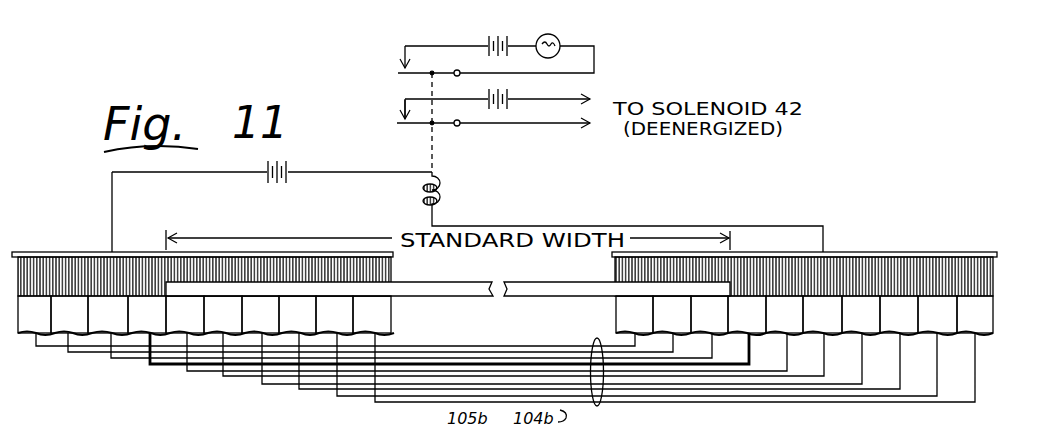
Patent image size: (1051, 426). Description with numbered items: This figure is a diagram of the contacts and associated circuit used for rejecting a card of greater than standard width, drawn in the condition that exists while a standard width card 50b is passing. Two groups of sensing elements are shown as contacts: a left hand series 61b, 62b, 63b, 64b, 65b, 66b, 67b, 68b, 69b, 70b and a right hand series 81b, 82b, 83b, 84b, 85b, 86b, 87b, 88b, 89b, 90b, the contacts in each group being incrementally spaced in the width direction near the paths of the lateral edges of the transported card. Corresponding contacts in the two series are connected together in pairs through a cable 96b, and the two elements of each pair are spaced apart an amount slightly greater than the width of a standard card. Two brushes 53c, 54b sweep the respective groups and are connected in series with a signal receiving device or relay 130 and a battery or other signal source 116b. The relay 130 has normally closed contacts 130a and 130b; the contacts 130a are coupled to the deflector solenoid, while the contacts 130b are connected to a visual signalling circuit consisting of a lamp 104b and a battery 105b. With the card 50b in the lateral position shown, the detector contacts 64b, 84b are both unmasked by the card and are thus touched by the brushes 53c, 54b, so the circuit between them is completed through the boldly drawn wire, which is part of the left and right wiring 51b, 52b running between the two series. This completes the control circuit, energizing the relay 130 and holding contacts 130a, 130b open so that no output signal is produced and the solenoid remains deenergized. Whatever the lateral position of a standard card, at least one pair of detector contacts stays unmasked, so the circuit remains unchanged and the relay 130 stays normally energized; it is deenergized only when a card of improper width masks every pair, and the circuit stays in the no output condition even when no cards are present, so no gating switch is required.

The battery 105b is at (488, 44).
The lamp 104b is at (560, 41).
The normally closed contacts 130b is at (402, 64).
The normally closed contacts 130a is at (399, 116).
The battery 116b is at (288, 170).
The relay 130 is at (442, 200).
The brush 53c is at (54, 252).
The brush 54b is at (954, 252).
The card 50b is at (458, 282).
The left conductor bundle 51b is at (97, 362).
The right conductor bundle 52b is at (986, 360).
The cable 96b is at (595, 405).
The contact 61b is at (34, 314).
The contact 62b is at (69, 314).
The contact 63b is at (108, 314).
The detector contact 64b is at (147, 314).
The contact 65b is at (185, 314).
The contact 66b is at (223, 314).
The contact 67b is at (260, 314).
The contact 68b is at (297, 314).
The contact 69b is at (334, 314).
The contact 70b is at (372, 314).
The contact 81b is at (634, 314).
The contact 82b is at (672, 314).
The contact 83b is at (709, 314).
The detector contact 84b is at (747, 314).
The contact 85b is at (784, 314).
The contact 86b is at (822, 314).
The contact 87b is at (861, 314).
The contact 88b is at (899, 314).
The contact 89b is at (937, 314).
The contact 90b is at (975, 314).